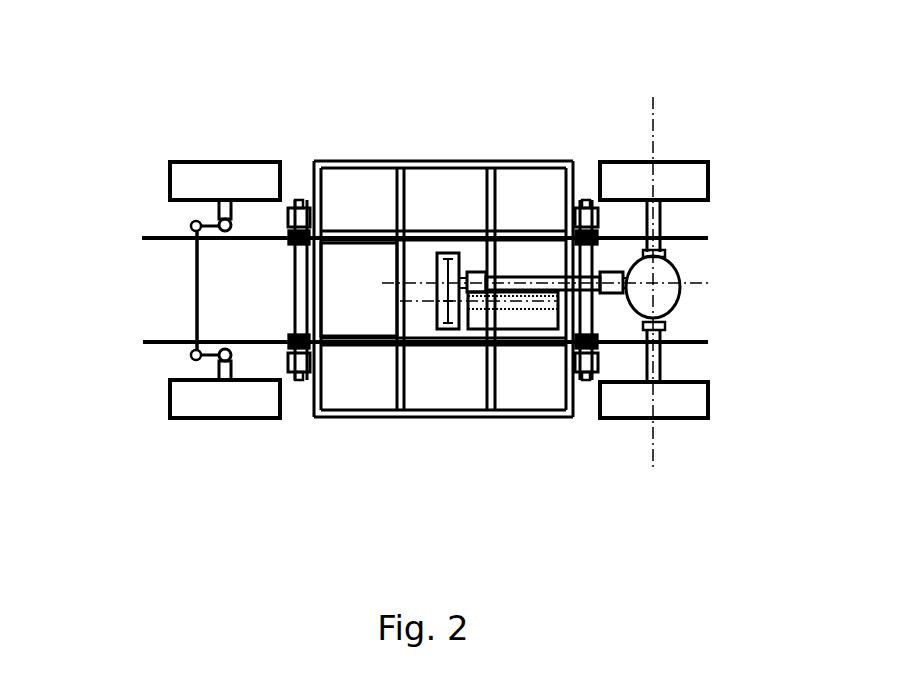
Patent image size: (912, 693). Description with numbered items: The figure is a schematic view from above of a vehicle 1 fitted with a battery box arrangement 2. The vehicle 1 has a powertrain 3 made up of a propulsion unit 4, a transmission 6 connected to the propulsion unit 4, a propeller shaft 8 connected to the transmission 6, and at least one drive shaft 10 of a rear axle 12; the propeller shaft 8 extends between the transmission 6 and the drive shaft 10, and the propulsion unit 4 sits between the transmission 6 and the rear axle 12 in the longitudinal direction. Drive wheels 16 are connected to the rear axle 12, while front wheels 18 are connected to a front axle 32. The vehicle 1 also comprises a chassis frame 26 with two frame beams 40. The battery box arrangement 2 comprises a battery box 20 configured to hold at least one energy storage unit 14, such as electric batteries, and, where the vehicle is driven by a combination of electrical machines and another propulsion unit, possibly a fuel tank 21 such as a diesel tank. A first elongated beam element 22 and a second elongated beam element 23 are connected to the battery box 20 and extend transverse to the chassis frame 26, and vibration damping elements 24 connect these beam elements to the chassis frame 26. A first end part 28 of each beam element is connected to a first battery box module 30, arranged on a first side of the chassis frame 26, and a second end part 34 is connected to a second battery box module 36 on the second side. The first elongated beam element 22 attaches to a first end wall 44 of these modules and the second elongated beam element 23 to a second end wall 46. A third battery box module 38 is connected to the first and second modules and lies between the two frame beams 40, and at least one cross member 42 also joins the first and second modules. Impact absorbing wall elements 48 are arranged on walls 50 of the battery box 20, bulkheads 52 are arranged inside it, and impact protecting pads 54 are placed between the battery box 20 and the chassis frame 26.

The vehicle 1 is at (252, 98).
The battery box arrangement 2 is at (466, 437).
The powertrain 3 is at (515, 432).
The propulsion unit 4 is at (480, 329).
The transmission 6 is at (448, 253).
The propeller shaft 8 is at (547, 277).
The drive shaft 10 is at (660, 227).
The rear axle 12 is at (699, 306).
The energy storage unit 14 is at (330, 163).
The drive wheels 16 is at (672, 160).
The front wheels 18 is at (170, 181).
The battery box 20 is at (368, 418).
The fuel tank 21 is at (342, 267).
The first elongated beam element 22 is at (293, 322).
The second elongated beam element 23 is at (663, 343).
The vibration damping elements 24 is at (288, 246).
The chassis frame 26 is at (687, 243).
The first end part 28 is at (301, 380).
The first battery box module 30 is at (412, 418).
The front axle 32 is at (194, 276).
The second end part 34 is at (292, 208).
The second battery box module 36 is at (510, 163).
The third battery box module 38 is at (362, 260).
The frame beams 40 is at (148, 243).
The cross member 42 is at (405, 270).
The first end wall 44 is at (299, 200).
The second end wall 46 is at (577, 417).
The impact absorbing wall elements 48 is at (488, 163).
The walls 50 is at (535, 417).
The bulkheads 52 is at (505, 417).
The impact protecting pads 54 is at (385, 415).